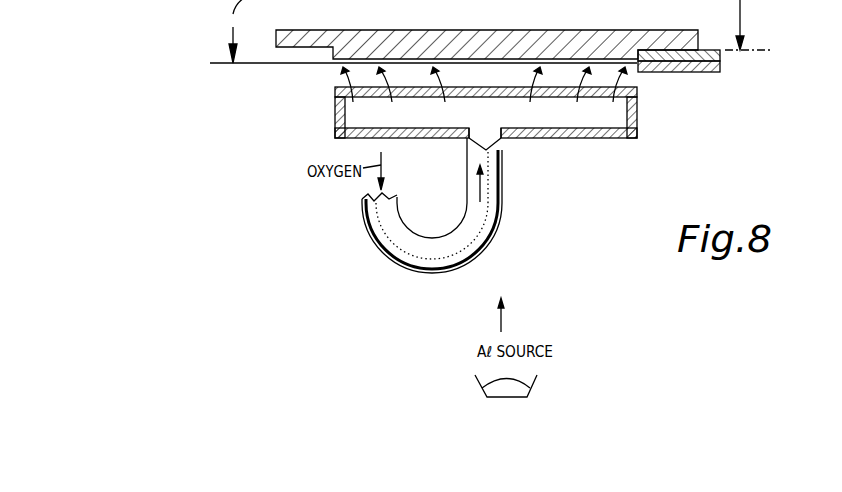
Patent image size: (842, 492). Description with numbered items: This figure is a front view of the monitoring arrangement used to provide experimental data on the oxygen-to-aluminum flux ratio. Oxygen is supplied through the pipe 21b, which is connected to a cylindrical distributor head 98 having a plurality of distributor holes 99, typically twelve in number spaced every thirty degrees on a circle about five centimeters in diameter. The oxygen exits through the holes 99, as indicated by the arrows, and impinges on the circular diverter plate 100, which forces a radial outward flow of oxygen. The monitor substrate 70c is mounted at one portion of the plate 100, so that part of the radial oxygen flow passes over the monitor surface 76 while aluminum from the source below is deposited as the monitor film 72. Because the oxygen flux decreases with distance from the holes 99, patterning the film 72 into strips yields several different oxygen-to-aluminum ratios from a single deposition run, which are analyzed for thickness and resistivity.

The diverter plate 100 is at (380, 32).
The monitor substrate 70c is at (722, 56).
The monitor film 72 is at (677, 72).
The monitor substrate surface 76 is at (705, 72).
The distributor holes 99 is at (338, 97).
The distributor head 98 is at (557, 122).
The oxygen pipe 21b is at (372, 234).